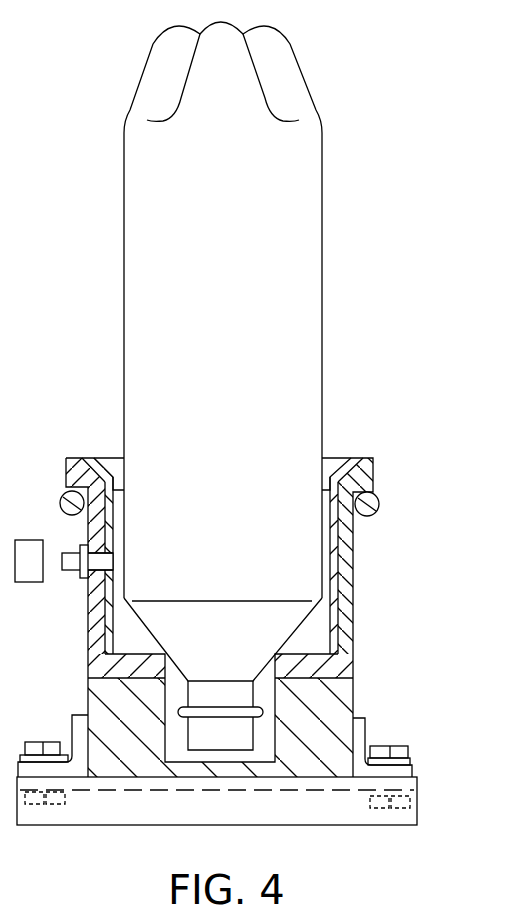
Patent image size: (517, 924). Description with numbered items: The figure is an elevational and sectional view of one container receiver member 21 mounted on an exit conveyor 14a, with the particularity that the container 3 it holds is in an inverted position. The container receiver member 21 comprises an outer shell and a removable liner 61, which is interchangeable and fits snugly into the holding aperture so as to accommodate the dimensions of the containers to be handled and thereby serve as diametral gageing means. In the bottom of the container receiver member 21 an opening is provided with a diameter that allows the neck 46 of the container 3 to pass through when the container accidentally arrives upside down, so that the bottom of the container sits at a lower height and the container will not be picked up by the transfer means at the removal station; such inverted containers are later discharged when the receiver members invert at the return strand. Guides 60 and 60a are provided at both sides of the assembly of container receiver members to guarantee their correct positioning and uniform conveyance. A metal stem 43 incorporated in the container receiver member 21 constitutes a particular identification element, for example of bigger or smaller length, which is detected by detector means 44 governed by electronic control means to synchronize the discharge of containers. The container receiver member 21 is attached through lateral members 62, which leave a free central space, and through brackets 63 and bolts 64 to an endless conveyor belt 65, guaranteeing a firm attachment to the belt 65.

The container 3 is at (146, 213).
The exit conveyor 14a is at (70, 835).
The container receiver member 21 is at (340, 628).
The metal stem 43 is at (72, 565).
The detector means 44 is at (30, 563).
The neck 46 is at (205, 694).
The guide 60 is at (62, 497).
The guide 60a is at (372, 518).
The removable liner 61 is at (338, 458).
The lateral member 62 is at (330, 694).
The bracket 63 is at (358, 735).
The bolt 64 is at (410, 753).
The endless conveyor belt 65 is at (275, 808).